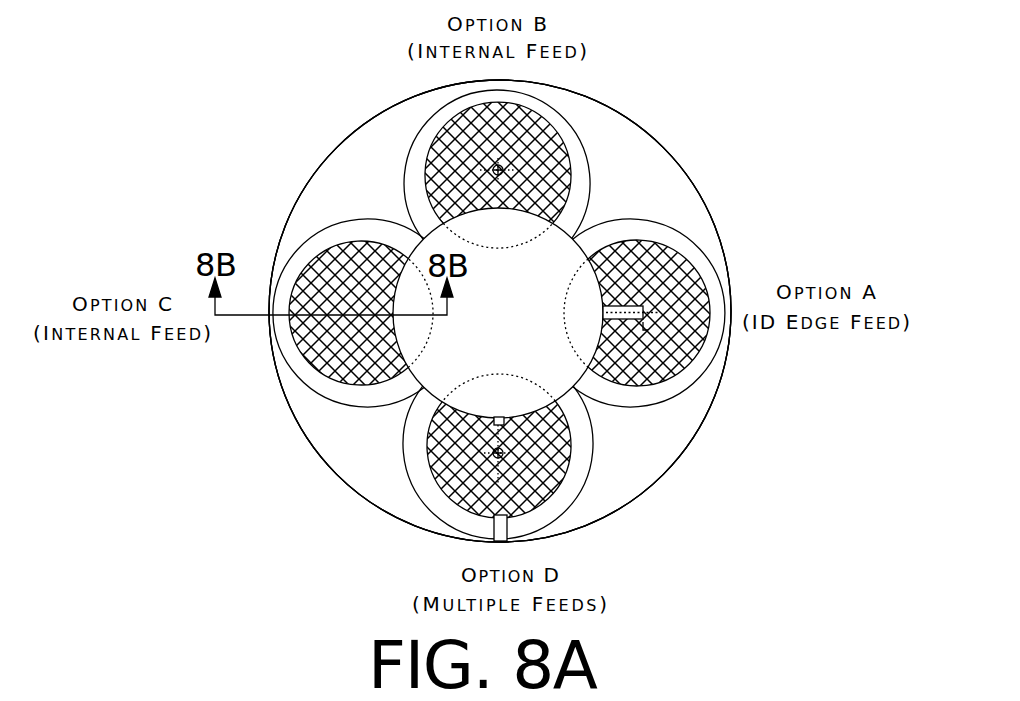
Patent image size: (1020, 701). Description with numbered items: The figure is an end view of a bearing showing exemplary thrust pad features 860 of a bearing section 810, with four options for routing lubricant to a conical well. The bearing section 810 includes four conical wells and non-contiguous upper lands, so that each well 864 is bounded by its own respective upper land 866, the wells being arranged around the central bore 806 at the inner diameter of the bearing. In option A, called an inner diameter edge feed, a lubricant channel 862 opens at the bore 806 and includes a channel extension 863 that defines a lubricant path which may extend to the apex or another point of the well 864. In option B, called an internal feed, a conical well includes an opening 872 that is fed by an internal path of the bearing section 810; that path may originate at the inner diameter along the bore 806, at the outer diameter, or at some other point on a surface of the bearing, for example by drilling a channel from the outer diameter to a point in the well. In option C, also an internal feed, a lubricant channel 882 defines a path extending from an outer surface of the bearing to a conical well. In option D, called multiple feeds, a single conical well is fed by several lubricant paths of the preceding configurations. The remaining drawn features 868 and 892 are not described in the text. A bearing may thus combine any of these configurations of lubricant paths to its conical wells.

The bore 806 is at (409, 363).
The bearing section 810 is at (477, 311).
The thrust pad features 860 is at (438, 311).
The lubricant channel 862 is at (650, 204).
The channel extension 863 is at (660, 210).
The well 864 is at (693, 283).
The upper land 866 is at (683, 249).
The ground plane region 868 is at (678, 192).
The opening 872 is at (580, 107).
The lubricant channel 882 is at (308, 332).
The multiple feed points 892 is at (431, 497).